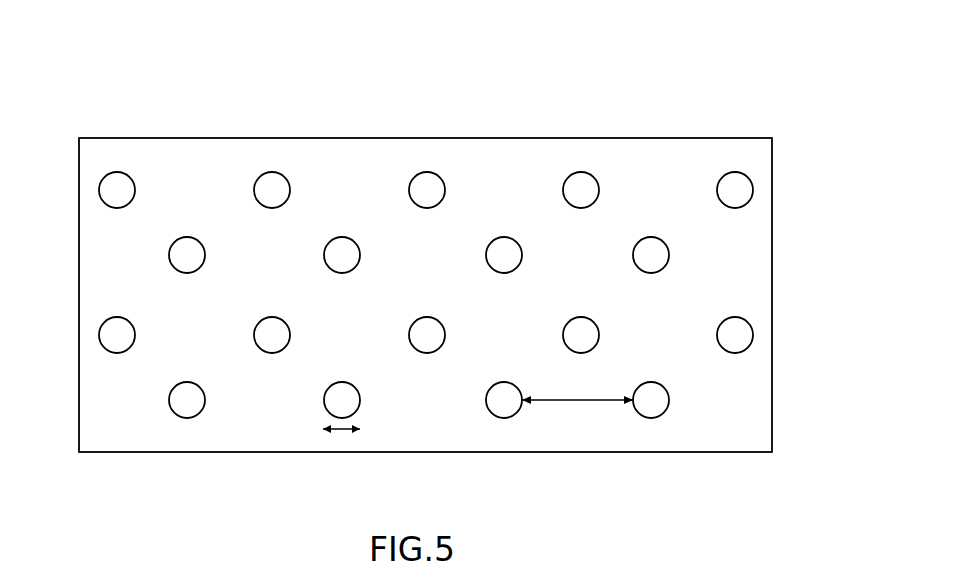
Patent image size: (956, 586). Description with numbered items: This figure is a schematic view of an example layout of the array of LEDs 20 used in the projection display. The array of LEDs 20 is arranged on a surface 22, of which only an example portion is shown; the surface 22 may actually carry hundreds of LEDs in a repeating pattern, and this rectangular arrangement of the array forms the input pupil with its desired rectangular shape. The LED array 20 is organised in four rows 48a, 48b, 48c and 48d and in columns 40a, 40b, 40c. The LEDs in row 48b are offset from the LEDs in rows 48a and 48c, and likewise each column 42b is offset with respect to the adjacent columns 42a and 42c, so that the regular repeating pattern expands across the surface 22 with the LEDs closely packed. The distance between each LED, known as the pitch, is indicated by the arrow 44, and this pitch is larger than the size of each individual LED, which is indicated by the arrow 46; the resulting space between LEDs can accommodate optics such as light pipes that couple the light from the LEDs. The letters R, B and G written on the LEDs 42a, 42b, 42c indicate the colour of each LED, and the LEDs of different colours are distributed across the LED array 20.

The array of LEDs 20 is at (79, 52).
The surface 22 is at (772, 263).
The column 40a is at (98, 138).
The column 40b is at (168, 138).
The column 40c is at (253, 138).
The LED 42a is at (427, 172).
The LED 42b is at (580, 172).
The LED 42c is at (736, 172).
The arrow indicating pitch 44 is at (570, 400).
The arrow indicating LED size 46 is at (342, 429).
The row 48a is at (72, 172).
The row 48b is at (72, 237).
The row 48c is at (72, 317).
The row 48d is at (72, 382).